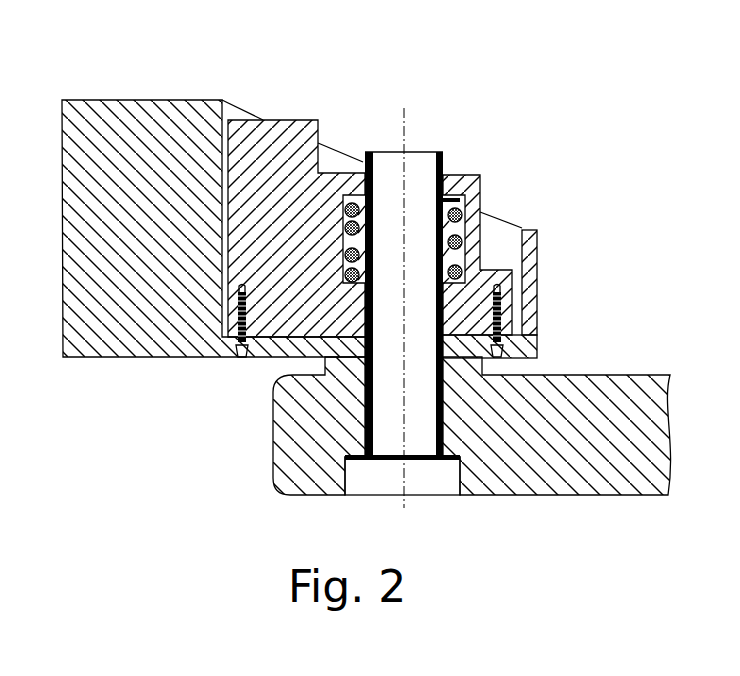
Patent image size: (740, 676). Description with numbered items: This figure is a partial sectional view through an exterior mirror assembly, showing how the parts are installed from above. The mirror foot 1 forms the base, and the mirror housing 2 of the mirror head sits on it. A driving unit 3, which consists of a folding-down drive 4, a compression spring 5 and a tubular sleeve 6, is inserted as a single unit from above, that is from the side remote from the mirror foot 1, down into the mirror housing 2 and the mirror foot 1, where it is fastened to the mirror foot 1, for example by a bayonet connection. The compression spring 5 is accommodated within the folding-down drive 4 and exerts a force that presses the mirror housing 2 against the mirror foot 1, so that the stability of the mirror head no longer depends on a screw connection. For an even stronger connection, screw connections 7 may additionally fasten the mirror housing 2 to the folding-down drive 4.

The mirror foot 1 is at (538, 476).
The mirror housing 2 is at (124, 338).
The driving unit 3 is at (337, 98).
The folding-down drive 4 is at (466, 183).
The compression spring 5 is at (463, 210).
The tubular sleeve 6 is at (418, 160).
The screw connections 7 is at (242, 353).